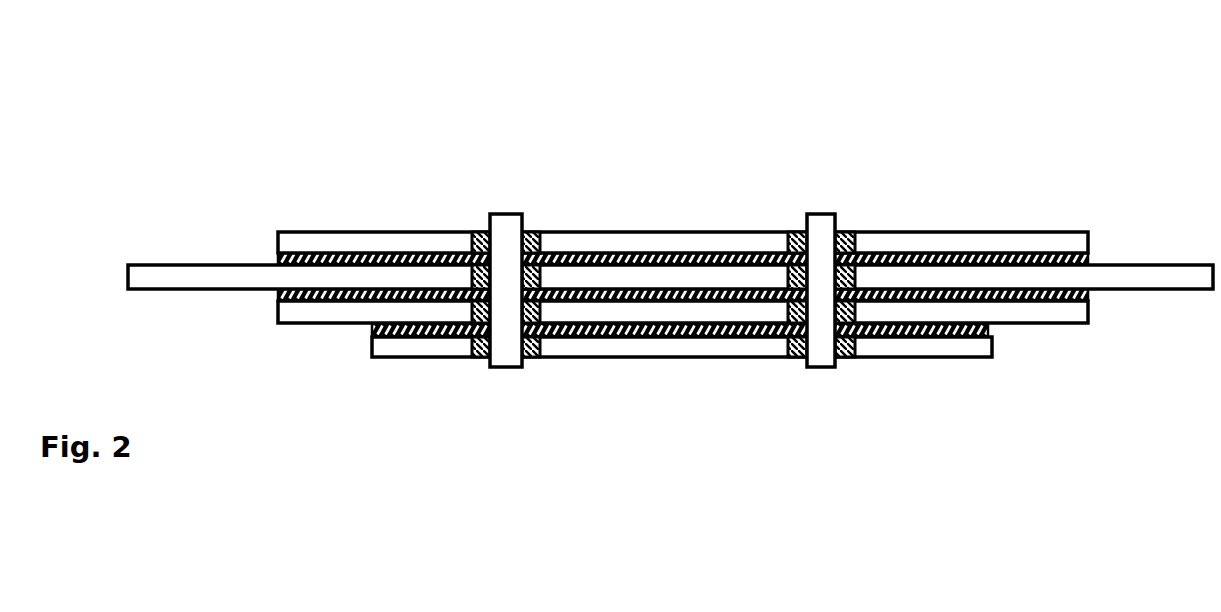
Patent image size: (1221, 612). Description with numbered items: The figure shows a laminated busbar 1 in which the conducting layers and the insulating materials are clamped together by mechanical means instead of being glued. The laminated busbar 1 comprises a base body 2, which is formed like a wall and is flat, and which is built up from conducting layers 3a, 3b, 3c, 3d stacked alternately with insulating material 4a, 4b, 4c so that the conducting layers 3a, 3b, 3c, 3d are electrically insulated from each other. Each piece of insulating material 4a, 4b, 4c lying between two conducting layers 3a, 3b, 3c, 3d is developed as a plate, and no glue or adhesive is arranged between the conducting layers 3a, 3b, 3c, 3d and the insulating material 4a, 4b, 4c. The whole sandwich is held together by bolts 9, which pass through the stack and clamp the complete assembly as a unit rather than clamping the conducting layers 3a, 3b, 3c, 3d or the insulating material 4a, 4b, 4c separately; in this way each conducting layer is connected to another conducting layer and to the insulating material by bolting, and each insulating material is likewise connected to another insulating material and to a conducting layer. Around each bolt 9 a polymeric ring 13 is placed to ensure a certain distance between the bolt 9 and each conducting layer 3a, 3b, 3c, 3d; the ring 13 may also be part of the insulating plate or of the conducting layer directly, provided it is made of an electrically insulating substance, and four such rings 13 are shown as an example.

The laminated busbar 1 is at (663, 233).
The base body 2 is at (663, 248).
The conducting layer 3a is at (438, 348).
The conducting layer 3b is at (355, 313).
The conducting layer 3c is at (222, 277).
The conducting layer 3d is at (313, 242).
The insulating material 4a is at (988, 333).
The insulating material 4b is at (280, 302).
The insulating material 4c is at (273, 257).
The bolt 9 is at (508, 243).
The polymeric ring 13 is at (532, 233).